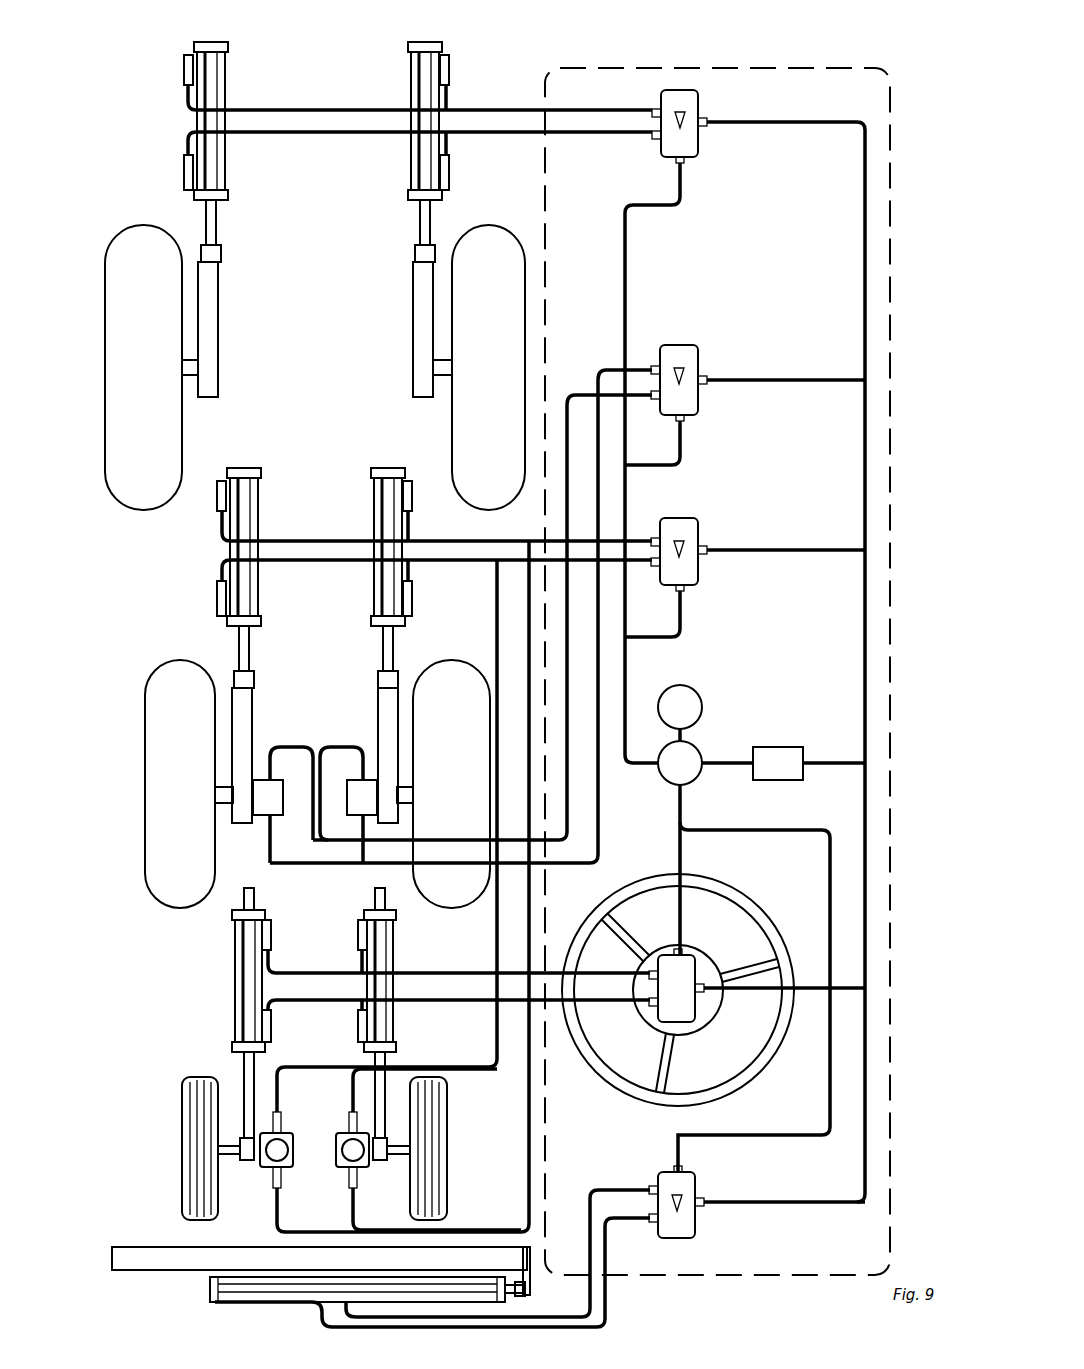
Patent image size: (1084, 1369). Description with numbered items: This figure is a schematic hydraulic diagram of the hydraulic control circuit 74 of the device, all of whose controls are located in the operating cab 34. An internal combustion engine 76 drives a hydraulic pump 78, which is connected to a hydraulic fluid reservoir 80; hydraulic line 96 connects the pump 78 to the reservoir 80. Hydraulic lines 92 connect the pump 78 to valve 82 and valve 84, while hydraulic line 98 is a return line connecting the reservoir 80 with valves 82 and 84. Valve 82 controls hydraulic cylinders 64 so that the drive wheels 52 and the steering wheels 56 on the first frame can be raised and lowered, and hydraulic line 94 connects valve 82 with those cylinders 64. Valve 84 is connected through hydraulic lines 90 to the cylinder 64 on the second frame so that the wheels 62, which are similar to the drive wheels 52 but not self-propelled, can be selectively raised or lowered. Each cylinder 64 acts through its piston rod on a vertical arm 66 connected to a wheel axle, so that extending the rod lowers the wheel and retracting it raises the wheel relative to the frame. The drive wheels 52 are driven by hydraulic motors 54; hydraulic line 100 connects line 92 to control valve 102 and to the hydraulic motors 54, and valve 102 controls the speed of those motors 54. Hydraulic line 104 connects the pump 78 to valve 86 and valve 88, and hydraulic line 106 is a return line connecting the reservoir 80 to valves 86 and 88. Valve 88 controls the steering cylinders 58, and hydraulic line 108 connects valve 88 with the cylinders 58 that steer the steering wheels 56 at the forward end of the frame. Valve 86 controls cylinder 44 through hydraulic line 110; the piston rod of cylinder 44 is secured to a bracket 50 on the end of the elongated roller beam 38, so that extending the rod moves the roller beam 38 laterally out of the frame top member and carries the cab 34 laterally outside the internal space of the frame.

The operating cab 34 is at (548, 177).
The roller beam 38 is at (180, 1252).
The cylinder 44 is at (210, 1295).
The bracket 50 is at (530, 1292).
The drive wheels 52 is at (195, 860).
The hydraulic motors 54 is at (350, 782).
The steering wheels 56 is at (185, 1100).
The steering cylinders 58 is at (372, 928).
The wheels 62 is at (170, 428).
The hydraulic cylinders 64 is at (214, 181).
The vertical arms 66 is at (208, 304).
The hydraulic control circuit 74 is at (767, 700).
The internal combustion engine 76 is at (690, 692).
The hydraulic pump 78 is at (688, 748).
The hydraulic fluid reservoir 80 is at (778, 747).
The valve 82 is at (686, 530).
The valve 84 is at (690, 148).
The valve 86 is at (668, 1180).
The valve 88 is at (686, 963).
The hydraulic lines 90 is at (470, 110).
The hydraulic lines 92 is at (626, 497).
The hydraulic line 94 is at (320, 548).
The hydraulic line 96 is at (736, 763).
The hydraulic line 98 is at (775, 122).
The hydraulic line 100 is at (590, 838).
The control valve 102 is at (682, 352).
The hydraulic line 104 is at (682, 853).
The hydraulic line 106 is at (745, 1204).
The hydraulic line 108 is at (466, 1000).
The hydraulic line 110 is at (638, 1190).